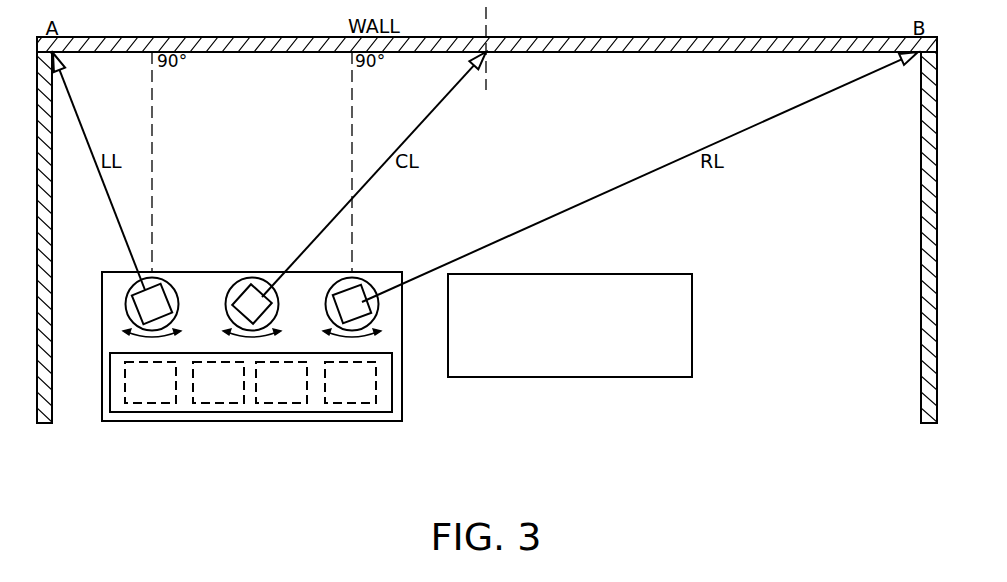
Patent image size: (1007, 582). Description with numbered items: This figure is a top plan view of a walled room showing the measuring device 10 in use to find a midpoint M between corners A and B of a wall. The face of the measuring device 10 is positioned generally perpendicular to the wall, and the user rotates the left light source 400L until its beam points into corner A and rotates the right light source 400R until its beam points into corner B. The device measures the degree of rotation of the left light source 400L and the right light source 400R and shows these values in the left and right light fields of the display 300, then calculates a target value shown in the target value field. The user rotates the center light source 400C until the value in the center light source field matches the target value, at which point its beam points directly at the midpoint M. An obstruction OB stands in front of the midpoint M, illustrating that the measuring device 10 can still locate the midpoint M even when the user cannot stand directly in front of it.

The measuring device 10 is at (250, 428).
The display 300 is at (392, 382).
The left light source 400L is at (167, 295).
The center light source 400C is at (237, 290).
The right light source 400R is at (366, 294).
The midpoint M is at (487, 72).
The obstruction OB is at (692, 326).